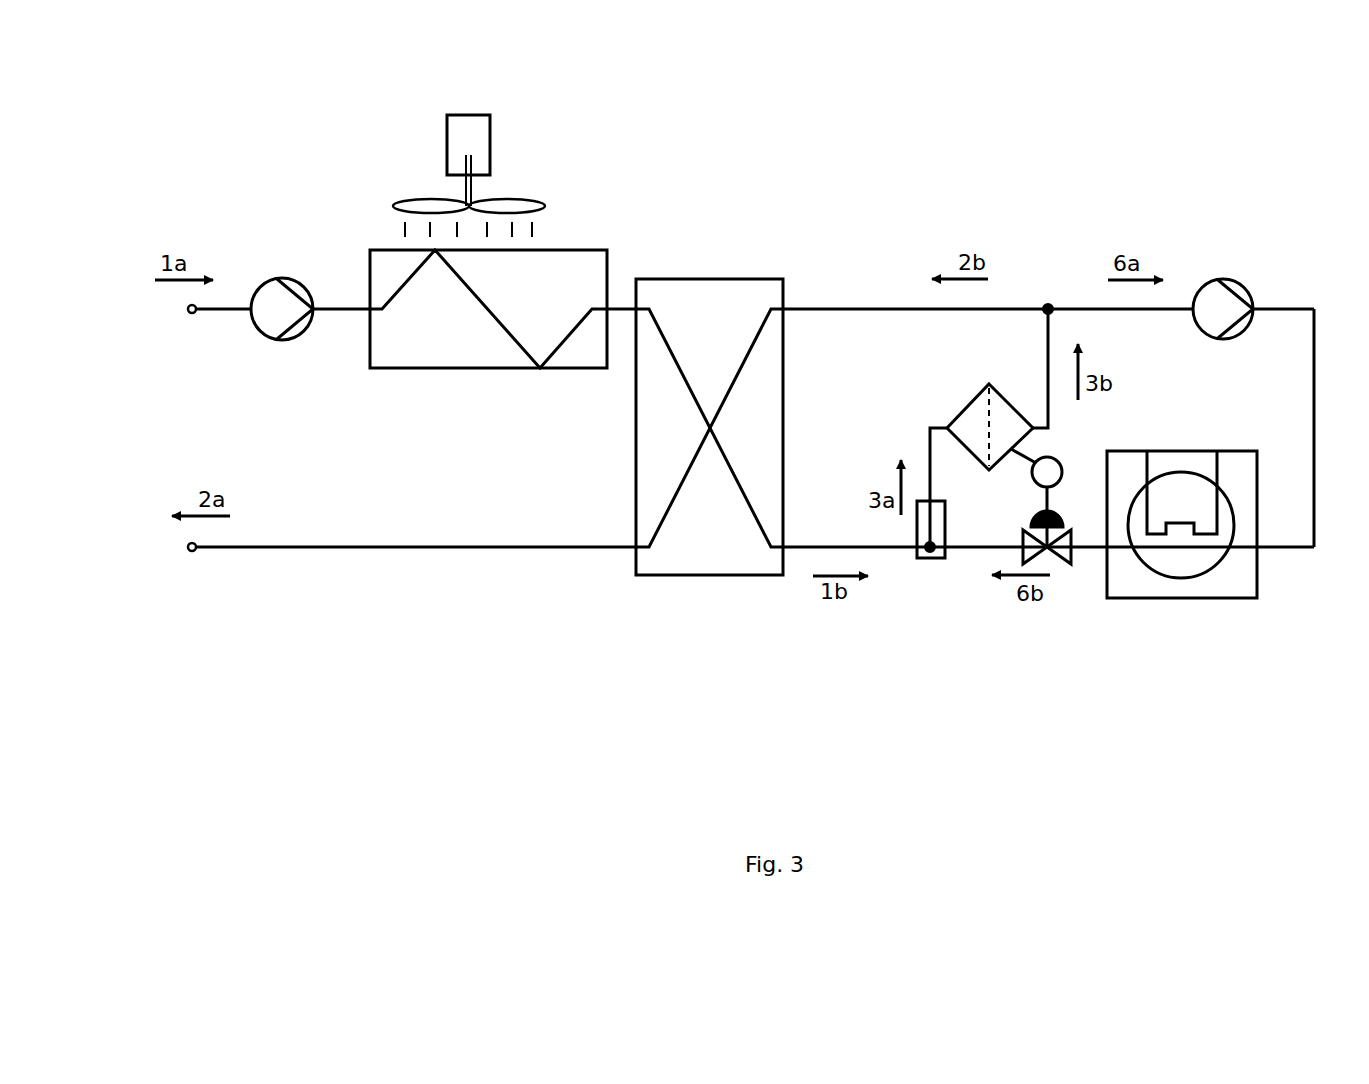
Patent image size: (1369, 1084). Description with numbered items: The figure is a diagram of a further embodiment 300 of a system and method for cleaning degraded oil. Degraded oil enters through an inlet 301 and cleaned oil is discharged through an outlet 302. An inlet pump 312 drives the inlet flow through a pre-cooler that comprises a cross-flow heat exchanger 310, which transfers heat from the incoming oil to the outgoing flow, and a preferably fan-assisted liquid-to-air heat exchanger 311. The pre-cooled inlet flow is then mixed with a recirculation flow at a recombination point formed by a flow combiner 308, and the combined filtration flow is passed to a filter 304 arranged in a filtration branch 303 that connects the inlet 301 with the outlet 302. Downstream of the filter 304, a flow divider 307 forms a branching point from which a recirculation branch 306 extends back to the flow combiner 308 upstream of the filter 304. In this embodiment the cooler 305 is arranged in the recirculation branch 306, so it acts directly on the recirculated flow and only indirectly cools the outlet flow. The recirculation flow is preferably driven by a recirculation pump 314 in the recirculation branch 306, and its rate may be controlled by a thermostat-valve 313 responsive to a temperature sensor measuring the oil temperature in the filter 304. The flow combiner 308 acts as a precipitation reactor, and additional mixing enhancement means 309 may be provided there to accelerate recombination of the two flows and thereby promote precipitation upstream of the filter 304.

The embodiment 300 is at (398, 690).
The inlet 301 is at (155, 327).
The outlet 302 is at (142, 566).
The filtration branch 303 is at (1046, 344).
The filter 304 is at (968, 405).
The cooler 305 is at (1230, 590).
The recirculation branch 306 is at (1312, 389).
The flow divider 307 is at (1048, 303).
The flow combiner 308 is at (933, 560).
The mixing enhancement means 309 is at (940, 530).
The cross-flow heat exchanger 310 is at (732, 292).
The liquid-to-air heat exchanger 311 is at (580, 258).
The inlet pump 312 is at (270, 278).
The thermostat-valve 313 is at (1052, 552).
The recirculation pump 314 is at (1225, 280).